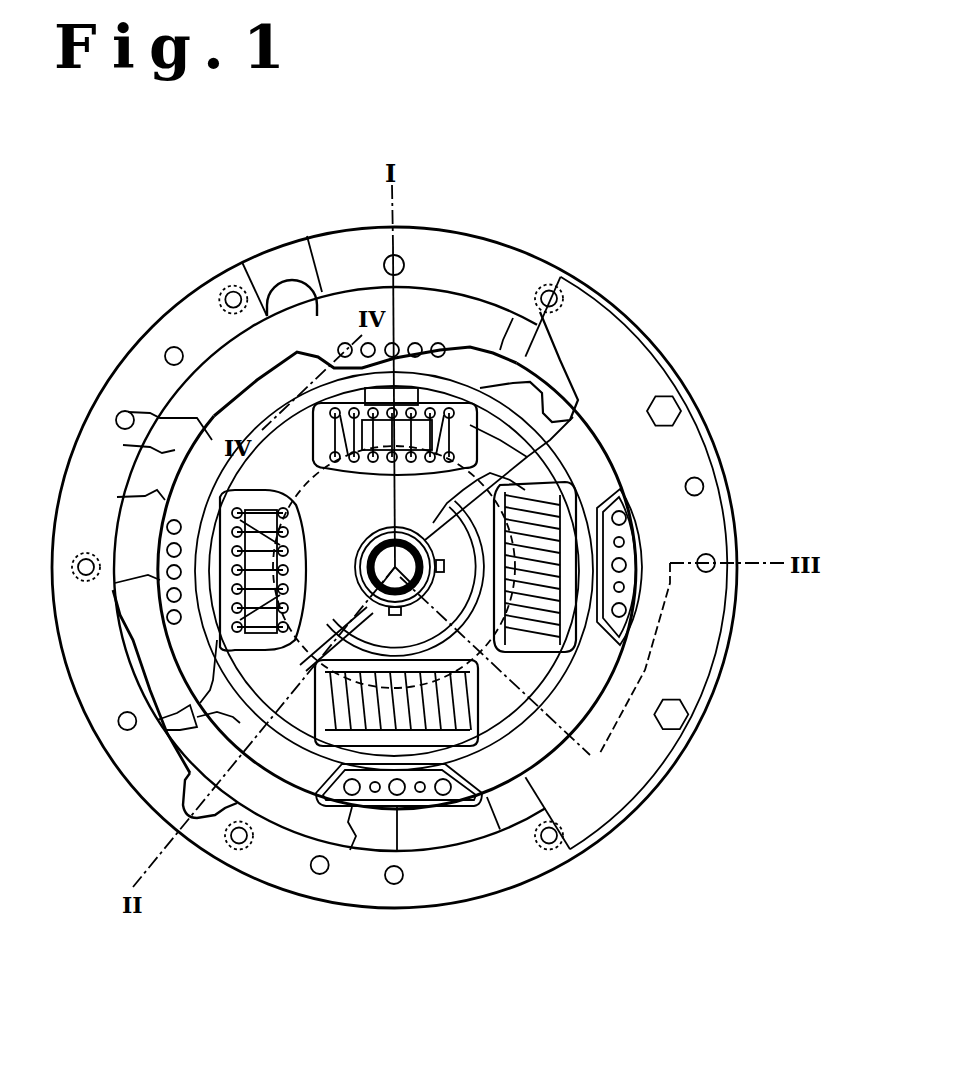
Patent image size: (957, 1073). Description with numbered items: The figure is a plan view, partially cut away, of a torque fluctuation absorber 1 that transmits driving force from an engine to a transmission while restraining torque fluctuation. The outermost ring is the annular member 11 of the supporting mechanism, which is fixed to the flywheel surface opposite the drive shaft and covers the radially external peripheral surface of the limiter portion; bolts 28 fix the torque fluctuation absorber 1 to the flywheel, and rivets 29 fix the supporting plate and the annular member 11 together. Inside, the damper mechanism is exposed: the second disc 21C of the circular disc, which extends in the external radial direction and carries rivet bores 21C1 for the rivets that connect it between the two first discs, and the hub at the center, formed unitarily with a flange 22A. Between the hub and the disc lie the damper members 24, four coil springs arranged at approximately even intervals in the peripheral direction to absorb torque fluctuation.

The torque fluctuation absorber 1 is at (582, 237).
The annular member 11 is at (437, 247).
The second disc 21C is at (353, 307).
The rivet bores 21C1 is at (387, 350).
The flange 22A is at (257, 387).
The damper members 24 is at (470, 395).
The bolts 28 is at (668, 412).
The rivets 29 is at (712, 558).